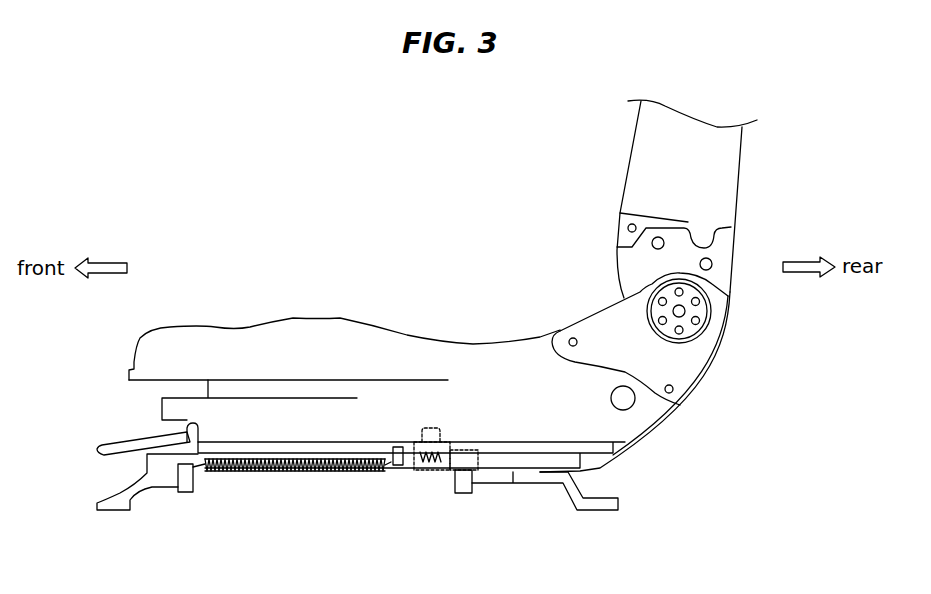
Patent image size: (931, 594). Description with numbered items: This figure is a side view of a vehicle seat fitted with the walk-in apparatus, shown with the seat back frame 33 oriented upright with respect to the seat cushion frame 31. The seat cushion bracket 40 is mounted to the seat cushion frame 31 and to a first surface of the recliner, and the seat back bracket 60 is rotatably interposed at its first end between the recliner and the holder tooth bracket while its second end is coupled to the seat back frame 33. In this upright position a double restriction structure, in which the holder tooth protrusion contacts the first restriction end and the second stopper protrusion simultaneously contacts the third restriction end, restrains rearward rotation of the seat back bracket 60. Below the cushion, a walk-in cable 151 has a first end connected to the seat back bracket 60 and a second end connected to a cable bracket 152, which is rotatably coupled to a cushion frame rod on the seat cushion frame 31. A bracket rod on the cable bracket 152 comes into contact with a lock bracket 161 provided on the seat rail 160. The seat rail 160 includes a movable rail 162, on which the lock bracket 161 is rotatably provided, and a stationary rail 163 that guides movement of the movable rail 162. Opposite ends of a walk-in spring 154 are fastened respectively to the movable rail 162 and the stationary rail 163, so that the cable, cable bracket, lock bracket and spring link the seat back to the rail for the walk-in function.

The seat cushion frame 31 is at (305, 335).
The seat back frame 33 is at (645, 162).
The seat cushion bracket 40 is at (687, 360).
The seat back bracket 60 is at (630, 254).
The walk-in cable 151 is at (676, 412).
The cable bracket 152 is at (465, 495).
The walk-in spring 154 is at (303, 480).
The seat rail 160 is at (222, 497).
The lock bracket 161 is at (418, 472).
The movable rail 162 is at (348, 480).
The stationary rail 163 is at (160, 460).